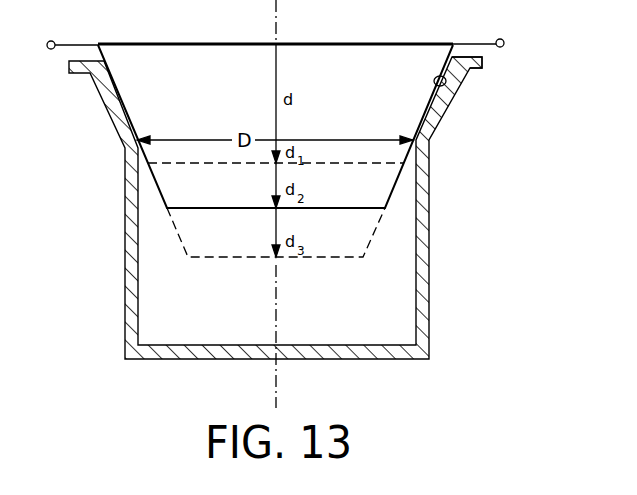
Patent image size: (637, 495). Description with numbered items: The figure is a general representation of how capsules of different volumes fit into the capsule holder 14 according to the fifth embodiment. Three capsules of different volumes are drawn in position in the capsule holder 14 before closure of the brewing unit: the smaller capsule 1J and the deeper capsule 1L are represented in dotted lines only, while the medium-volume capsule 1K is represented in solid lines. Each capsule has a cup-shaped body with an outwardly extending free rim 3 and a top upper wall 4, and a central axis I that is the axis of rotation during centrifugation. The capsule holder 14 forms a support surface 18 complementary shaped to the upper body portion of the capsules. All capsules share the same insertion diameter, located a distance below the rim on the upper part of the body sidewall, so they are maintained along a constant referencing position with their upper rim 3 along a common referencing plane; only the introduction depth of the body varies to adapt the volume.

The central axis I is at (278, 21).
The free rim 3 is at (487, 42).
The top upper wall 4 is at (391, 43).
The capsule holder 14 is at (124, 262).
The support surface 18 is at (450, 80).
The smaller capsule 1J is at (343, 163).
The medium-volume capsule 1K is at (343, 208).
The deeper capsule 1L is at (343, 257).